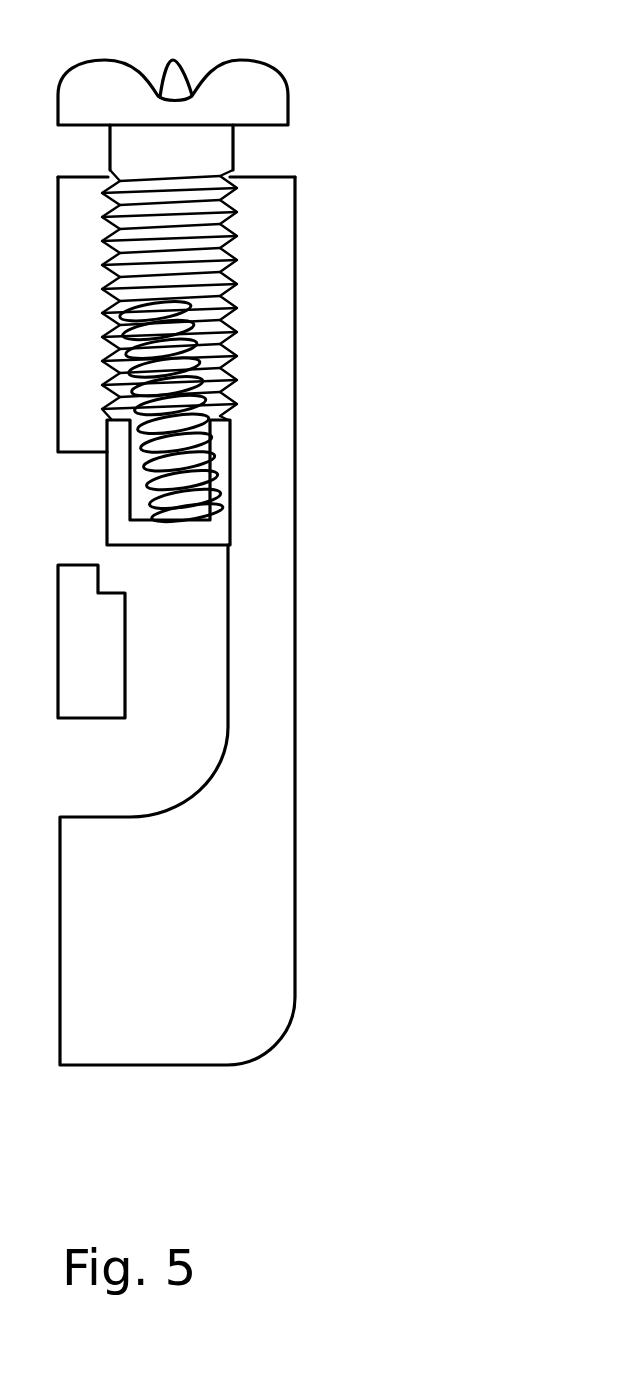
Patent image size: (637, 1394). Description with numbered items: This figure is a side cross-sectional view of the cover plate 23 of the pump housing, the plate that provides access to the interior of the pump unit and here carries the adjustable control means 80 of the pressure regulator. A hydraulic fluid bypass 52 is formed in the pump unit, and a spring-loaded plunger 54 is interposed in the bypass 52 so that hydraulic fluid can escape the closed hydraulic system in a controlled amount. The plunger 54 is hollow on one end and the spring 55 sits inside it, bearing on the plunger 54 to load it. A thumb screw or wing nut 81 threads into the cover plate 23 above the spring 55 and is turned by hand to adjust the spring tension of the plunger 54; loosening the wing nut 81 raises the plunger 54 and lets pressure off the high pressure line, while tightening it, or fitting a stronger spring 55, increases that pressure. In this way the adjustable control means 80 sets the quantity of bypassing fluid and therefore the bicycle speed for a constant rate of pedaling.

The adjustable control means 80 is at (452, 129).
The thumb screw or wing nut 81 is at (258, 95).
The spring 55 is at (150, 333).
The spring-loaded plunger 54 is at (217, 480).
The hydraulic fluid bypass 52 is at (147, 642).
The cover plate 23 is at (240, 868).